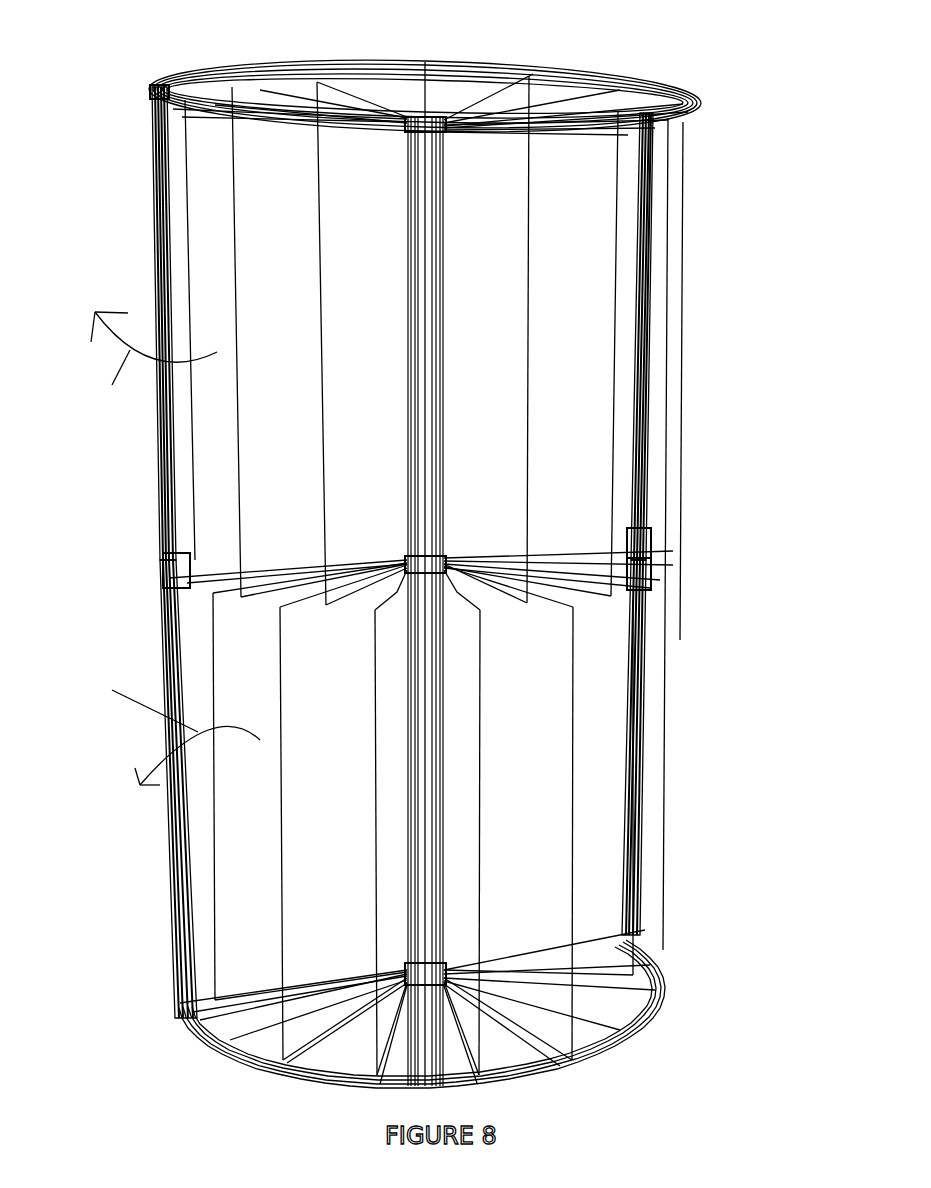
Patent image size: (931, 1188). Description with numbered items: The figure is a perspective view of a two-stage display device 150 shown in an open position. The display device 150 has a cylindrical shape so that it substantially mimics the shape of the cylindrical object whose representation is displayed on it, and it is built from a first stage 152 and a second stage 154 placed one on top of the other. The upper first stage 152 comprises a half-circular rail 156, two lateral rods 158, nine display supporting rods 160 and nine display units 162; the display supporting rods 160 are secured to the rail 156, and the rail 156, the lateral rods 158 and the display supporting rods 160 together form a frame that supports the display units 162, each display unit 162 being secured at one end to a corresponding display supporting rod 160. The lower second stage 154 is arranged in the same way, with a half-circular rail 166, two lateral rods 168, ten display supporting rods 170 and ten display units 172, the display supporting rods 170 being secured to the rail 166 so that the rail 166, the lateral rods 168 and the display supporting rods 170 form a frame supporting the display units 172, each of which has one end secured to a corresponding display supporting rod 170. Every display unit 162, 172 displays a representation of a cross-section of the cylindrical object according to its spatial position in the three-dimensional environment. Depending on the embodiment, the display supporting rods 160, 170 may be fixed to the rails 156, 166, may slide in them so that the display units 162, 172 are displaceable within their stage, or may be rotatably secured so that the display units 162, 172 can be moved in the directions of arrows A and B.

The two-stage display device 150 is at (119, 48).
The first stage 152 is at (714, 428).
The second stage 154 is at (720, 820).
The half-circular rail 156 is at (640, 78).
The lateral rods 158 is at (162, 297).
The display supporting rods 160 is at (310, 103).
The display units 162 is at (270, 500).
The half-circular rail 166 is at (610, 1060).
The lateral rods 168 is at (170, 672).
The display supporting rods 170 is at (205, 1002).
The display units 172 is at (237, 930).